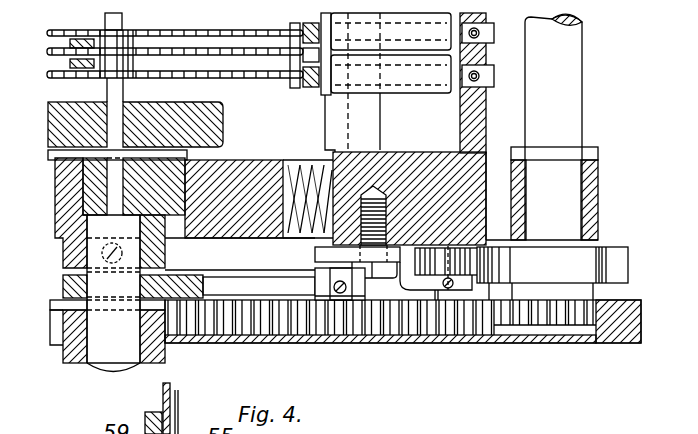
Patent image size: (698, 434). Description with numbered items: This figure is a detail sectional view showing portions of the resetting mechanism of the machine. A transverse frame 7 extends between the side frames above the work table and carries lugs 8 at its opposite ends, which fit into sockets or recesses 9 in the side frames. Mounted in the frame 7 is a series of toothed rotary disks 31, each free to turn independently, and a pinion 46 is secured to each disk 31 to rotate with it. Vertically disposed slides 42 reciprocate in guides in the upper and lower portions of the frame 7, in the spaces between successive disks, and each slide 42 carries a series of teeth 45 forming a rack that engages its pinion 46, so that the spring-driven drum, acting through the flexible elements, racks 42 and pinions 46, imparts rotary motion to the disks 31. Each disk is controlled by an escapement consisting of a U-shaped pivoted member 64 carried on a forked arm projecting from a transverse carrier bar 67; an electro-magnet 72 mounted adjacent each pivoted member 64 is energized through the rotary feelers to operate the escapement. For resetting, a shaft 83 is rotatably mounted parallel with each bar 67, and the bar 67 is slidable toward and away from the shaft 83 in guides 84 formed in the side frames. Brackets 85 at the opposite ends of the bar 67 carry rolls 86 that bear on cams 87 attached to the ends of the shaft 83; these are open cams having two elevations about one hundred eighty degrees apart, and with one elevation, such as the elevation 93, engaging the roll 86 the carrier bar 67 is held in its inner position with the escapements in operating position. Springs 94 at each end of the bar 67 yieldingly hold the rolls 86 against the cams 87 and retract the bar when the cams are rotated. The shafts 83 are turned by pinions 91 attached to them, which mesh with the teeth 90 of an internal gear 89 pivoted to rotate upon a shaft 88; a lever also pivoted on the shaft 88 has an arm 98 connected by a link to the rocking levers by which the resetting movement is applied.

The transverse frame 7 is at (210, 115).
The lugs 8 is at (188, 152).
The sockets or recesses 9 is at (257, 162).
The rotary disks 31 is at (218, 27).
The slides 42 is at (78, 38).
The teeth 45 is at (87, 69).
The pinion 46 is at (132, 43).
The pivoted member 64 is at (303, 88).
The bar 67 is at (478, 112).
The electro-magnets 72 is at (430, 93).
The shafts 83 is at (563, 68).
The guides 84 is at (496, 190).
The brackets 85 is at (418, 285).
The rolls 86 is at (466, 275).
The cams 87 is at (576, 268).
The shaft 88 is at (108, 345).
The gear 89 is at (350, 335).
The teeth 90 is at (288, 323).
The pinions 91 is at (564, 318).
The elevation 93 is at (618, 263).
The springs 94 is at (295, 238).
The arm 98 is at (223, 283).